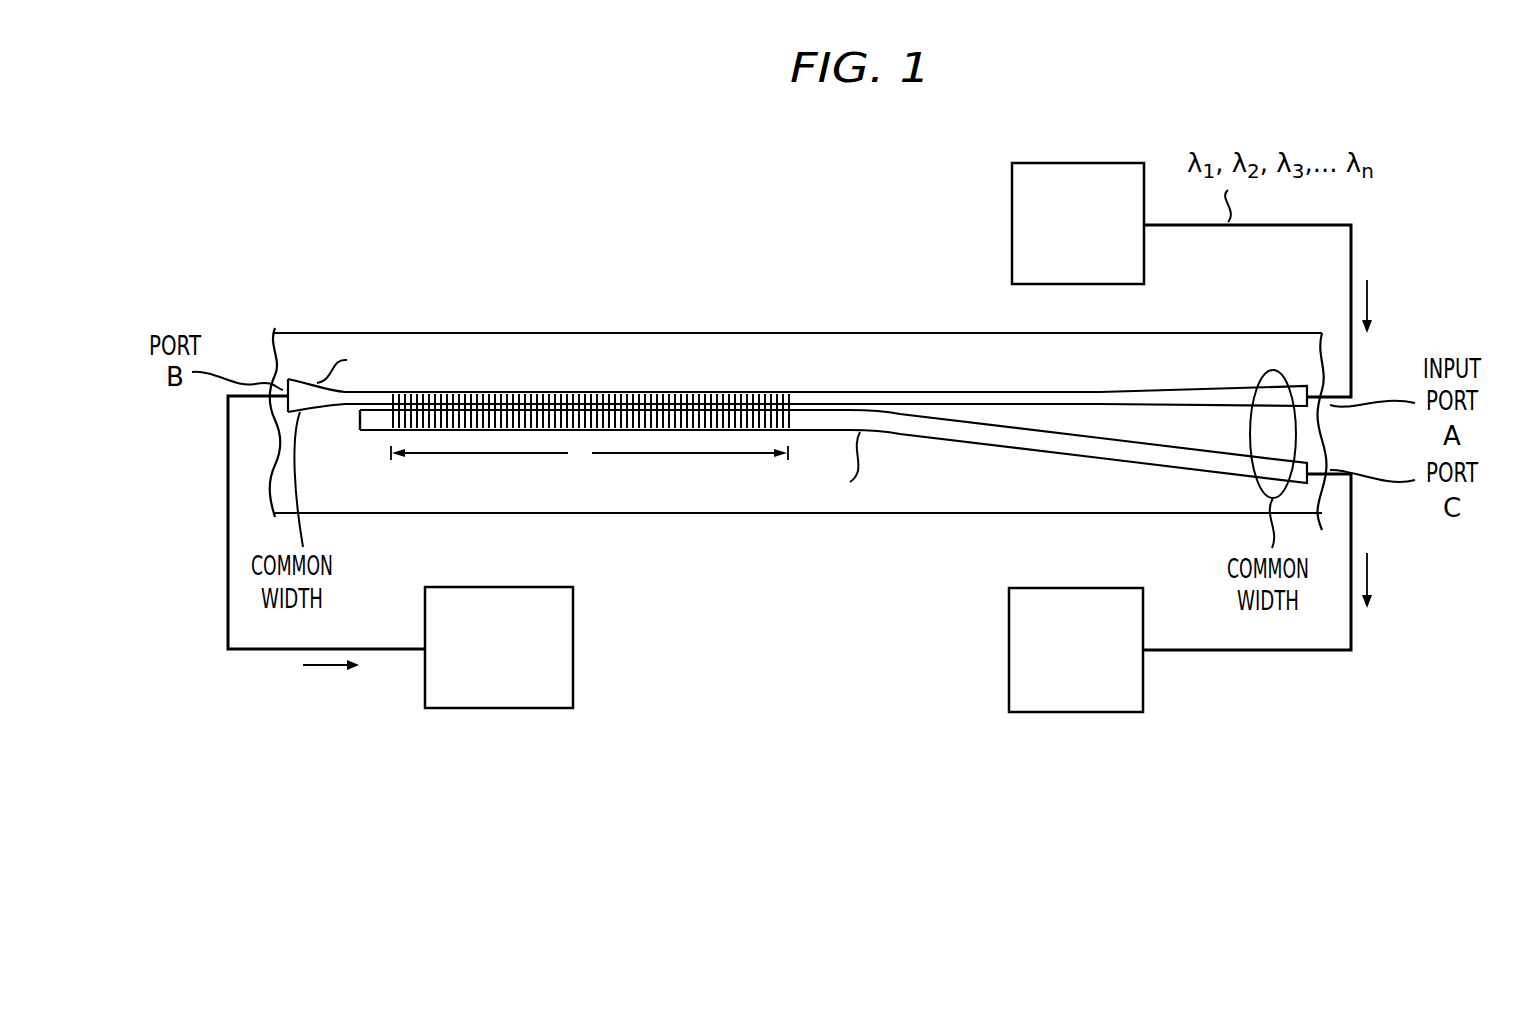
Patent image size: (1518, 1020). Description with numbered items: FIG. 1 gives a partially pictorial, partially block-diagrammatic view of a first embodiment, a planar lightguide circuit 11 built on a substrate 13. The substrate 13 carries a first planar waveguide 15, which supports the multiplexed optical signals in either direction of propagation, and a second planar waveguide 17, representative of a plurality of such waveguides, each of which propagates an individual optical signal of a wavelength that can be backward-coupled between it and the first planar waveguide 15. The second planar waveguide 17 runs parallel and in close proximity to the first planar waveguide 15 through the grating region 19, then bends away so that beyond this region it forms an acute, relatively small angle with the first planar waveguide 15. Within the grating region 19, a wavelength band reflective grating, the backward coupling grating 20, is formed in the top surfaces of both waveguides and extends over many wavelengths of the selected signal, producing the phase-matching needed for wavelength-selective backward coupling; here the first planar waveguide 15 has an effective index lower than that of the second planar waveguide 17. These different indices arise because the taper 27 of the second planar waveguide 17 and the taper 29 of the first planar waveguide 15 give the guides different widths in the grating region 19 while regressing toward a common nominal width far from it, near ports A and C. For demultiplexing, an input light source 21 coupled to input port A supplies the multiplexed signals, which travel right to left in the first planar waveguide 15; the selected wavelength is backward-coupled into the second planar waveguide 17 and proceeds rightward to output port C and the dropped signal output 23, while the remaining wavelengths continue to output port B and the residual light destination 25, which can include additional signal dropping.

The planar lightguide circuit 11 is at (566, 260).
The substrate 13 is at (1240, 334).
The first planar waveguide 15 is at (928, 392).
The second planar waveguide 17 is at (925, 438).
The grating region 19 is at (563, 385).
The backward coupling grating 20 is at (380, 420).
The input light source 21 is at (1052, 163).
The dropped signal output 23 is at (1008, 652).
The residual light destination 25 is at (575, 650).
The taper 27 is at (1003, 450).
The taper 29 is at (1140, 388).